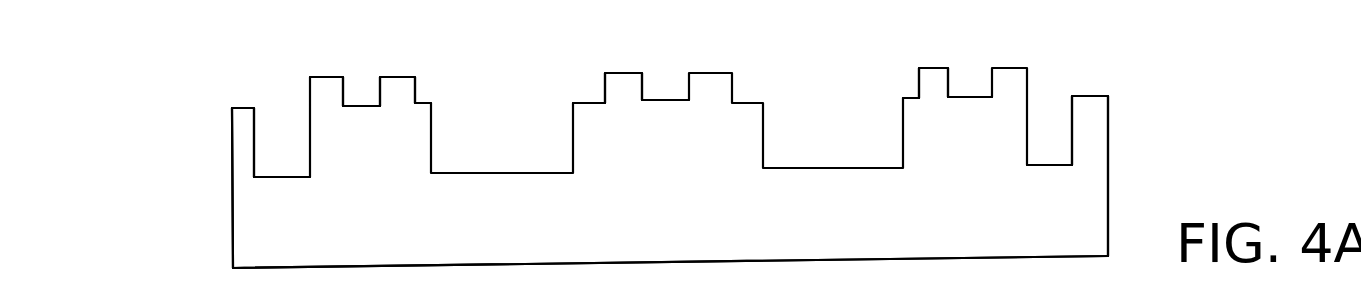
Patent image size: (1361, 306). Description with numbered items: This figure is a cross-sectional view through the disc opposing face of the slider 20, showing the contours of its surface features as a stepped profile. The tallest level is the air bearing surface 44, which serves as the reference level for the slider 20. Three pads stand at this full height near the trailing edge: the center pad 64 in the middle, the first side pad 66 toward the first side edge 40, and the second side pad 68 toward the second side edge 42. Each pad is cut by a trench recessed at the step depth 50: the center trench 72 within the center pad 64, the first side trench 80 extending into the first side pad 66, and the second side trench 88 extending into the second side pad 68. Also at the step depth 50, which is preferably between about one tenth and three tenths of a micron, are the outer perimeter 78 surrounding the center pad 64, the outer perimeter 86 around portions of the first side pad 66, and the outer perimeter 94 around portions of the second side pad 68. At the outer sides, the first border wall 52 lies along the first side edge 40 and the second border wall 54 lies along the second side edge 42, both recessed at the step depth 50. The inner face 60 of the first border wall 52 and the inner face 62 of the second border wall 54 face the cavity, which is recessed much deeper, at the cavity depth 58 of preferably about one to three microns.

The slider 20 is at (351, 276).
The first side edge 40 is at (232, 151).
The second side edge 42 is at (1108, 148).
The air bearing surface 44 is at (416, 72).
The step depth 50 is at (742, 73).
The first border wall 52 is at (236, 123).
The second border wall 54 is at (1090, 117).
The cavity depth 58 is at (471, 77).
The inner face 60 is at (254, 140).
The inner face 62 is at (1072, 117).
The center pad 64 is at (627, 86).
The first side pad 66 is at (338, 90).
The second side pad 68 is at (935, 76).
The center trench 72 is at (666, 84).
The outer perimeter 78 is at (590, 99).
The first side trench 80 is at (368, 92).
The outer perimeter 86 is at (426, 102).
The second side trench 88 is at (969, 84).
The outer perimeter 94 is at (910, 96).